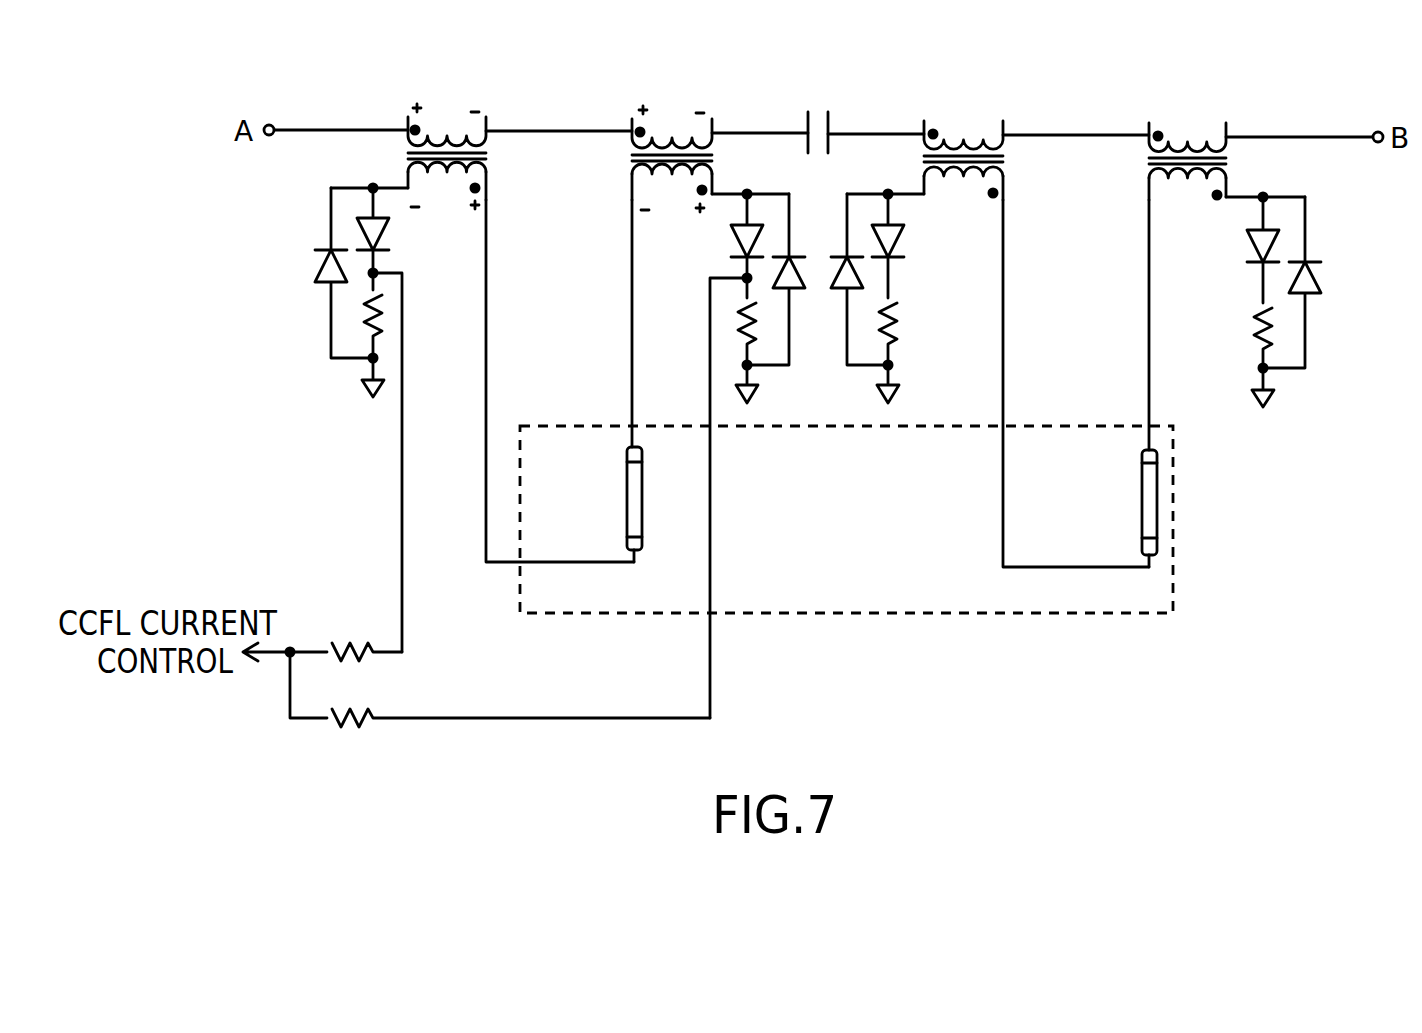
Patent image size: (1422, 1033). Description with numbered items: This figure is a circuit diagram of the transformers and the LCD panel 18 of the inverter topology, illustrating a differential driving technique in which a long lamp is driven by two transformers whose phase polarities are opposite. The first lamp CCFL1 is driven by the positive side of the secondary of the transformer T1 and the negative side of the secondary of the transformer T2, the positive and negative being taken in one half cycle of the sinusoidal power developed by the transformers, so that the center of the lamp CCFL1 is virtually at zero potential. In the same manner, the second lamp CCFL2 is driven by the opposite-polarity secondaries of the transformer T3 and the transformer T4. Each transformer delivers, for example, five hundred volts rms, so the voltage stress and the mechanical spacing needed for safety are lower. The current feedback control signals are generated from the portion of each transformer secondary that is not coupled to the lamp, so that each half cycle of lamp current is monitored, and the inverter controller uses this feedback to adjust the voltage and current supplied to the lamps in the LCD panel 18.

The LCD panel 18 is at (940, 615).
The transformer T1 is at (447, 135).
The transformer T2 is at (672, 137).
The transformer T3 is at (963, 131).
The transformer T4 is at (1187, 131).
The cold cathode fluorescent lamp CCFL1 is at (589, 504).
The cold cathode fluorescent lamp CCFL2 is at (1101, 508).